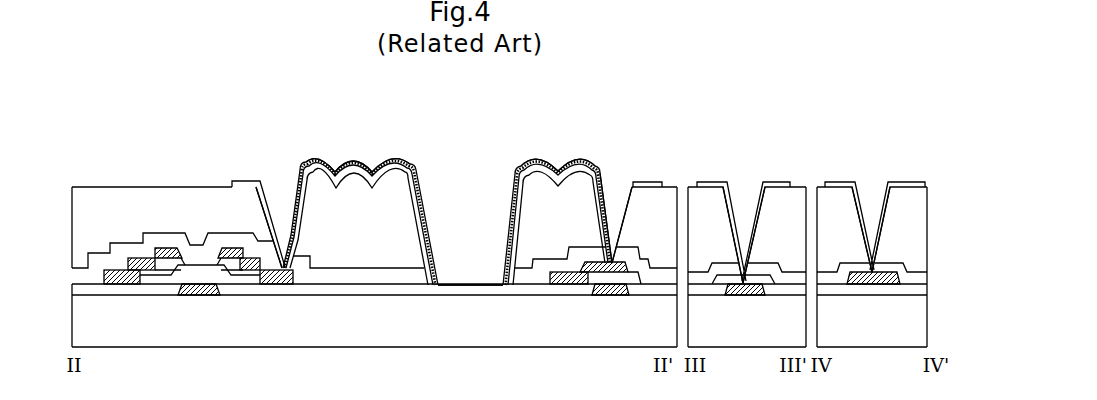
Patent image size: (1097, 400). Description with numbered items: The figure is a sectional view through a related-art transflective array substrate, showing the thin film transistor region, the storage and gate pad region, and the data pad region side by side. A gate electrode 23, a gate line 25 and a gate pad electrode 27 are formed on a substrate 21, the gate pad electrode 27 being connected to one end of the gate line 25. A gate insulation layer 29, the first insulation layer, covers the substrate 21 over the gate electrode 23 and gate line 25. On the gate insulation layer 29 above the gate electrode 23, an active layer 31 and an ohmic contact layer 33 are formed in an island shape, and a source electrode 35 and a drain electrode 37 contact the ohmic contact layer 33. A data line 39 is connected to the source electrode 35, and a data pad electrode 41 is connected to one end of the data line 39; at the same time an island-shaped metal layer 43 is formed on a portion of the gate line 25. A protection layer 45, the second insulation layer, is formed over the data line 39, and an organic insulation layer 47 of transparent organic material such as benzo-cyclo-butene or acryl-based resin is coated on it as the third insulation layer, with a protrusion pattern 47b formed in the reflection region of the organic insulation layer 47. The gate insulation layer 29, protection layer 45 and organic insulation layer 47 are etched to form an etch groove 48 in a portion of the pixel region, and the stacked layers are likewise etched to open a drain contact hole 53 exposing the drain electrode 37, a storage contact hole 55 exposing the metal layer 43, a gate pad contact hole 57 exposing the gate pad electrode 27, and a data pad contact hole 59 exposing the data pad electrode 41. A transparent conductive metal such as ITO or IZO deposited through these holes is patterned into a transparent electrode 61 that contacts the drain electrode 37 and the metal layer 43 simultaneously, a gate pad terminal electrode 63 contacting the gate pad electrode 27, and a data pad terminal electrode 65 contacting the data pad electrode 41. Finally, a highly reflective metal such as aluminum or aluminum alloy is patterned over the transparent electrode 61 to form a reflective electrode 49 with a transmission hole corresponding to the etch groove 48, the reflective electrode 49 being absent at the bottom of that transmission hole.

The substrate 21 is at (471, 333).
The gate electrode 23 is at (201, 292).
The gate line 25 is at (615, 293).
The gate pad electrode 27 is at (745, 290).
The gate insulation layer 29 is at (253, 290).
The active layer 31 is at (157, 283).
The ohmic contact layer 33 is at (140, 283).
The source electrode 35 is at (166, 249).
The drain electrode 37 is at (224, 249).
The data line 39 is at (113, 270).
The data pad electrode 41 is at (874, 283).
The metal layer 43 is at (568, 283).
The protection layer 45 is at (383, 280).
The organic insulation layer 47 is at (355, 172).
The protrusion pattern 47b is at (317, 162).
The etch groove 48 is at (467, 192).
The reflective electrode 49 is at (384, 160).
The drain contact hole 53 is at (279, 187).
The storage contact hole 55 is at (613, 190).
The gate pad contact hole 57 is at (748, 192).
The data pad contact hole 59 is at (874, 192).
The transparent electrode 61 is at (469, 289).
The gate pad terminal electrode 63 is at (779, 182).
The data pad terminal electrode 65 is at (907, 182).